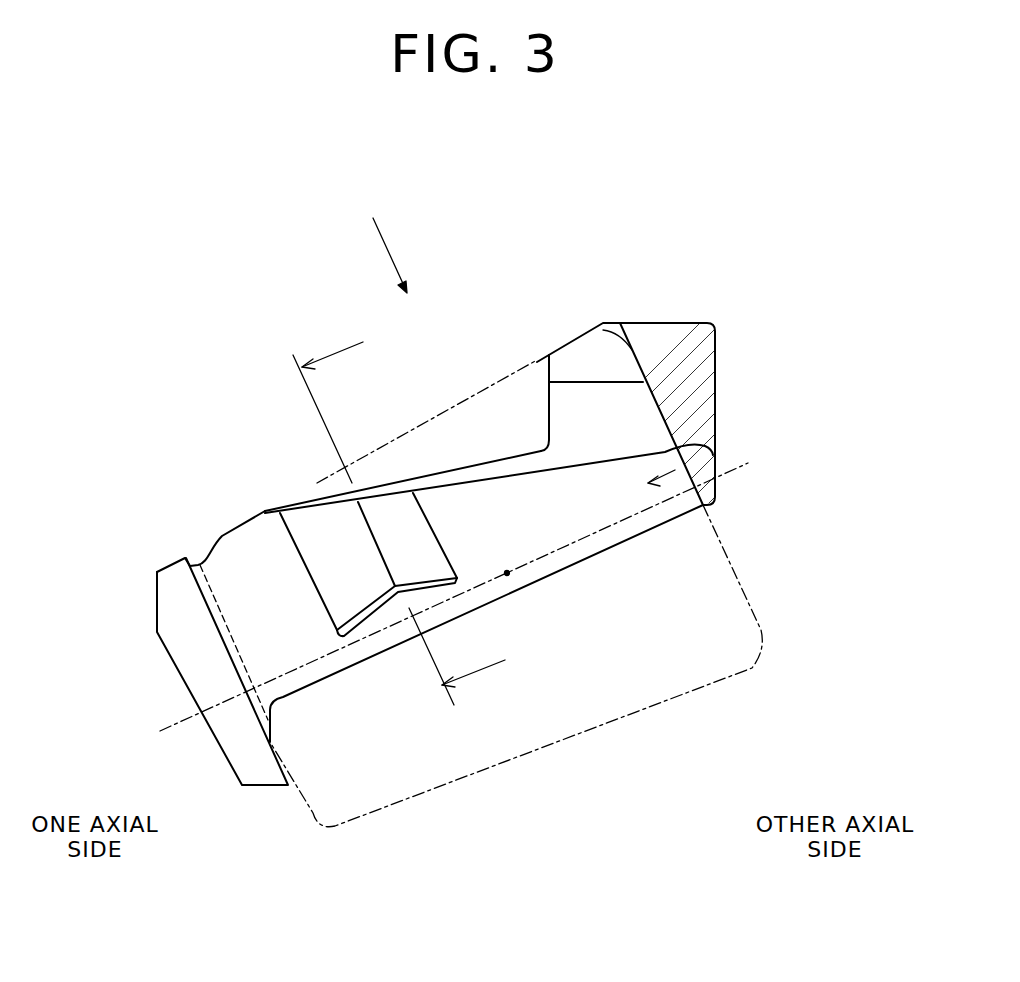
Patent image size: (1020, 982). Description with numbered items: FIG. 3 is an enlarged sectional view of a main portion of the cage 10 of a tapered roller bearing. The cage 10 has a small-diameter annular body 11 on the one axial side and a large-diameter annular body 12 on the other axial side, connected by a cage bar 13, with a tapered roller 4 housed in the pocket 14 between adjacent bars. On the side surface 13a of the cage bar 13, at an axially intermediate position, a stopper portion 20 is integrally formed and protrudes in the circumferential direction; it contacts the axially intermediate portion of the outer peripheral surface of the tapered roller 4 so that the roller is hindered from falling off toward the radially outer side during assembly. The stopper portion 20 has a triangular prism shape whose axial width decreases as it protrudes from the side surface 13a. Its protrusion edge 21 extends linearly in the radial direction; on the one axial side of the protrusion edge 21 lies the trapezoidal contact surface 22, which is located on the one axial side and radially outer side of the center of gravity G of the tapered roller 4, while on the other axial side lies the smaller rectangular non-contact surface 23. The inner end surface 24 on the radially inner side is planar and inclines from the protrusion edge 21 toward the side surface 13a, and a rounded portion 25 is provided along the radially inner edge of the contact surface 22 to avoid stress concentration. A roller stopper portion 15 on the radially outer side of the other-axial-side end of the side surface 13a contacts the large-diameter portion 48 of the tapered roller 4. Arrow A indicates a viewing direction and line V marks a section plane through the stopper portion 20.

The cage 10 is at (526, 514).
The small-diameter annular body 11 is at (205, 655).
The large-diameter annular body 12 is at (690, 383).
The cage bar 13 is at (438, 470).
The side surface 13a is at (493, 520).
The pocket 14 is at (697, 482).
The roller stopper portion 15 is at (585, 355).
The tapered roller 4 is at (527, 365).
The stopper portion 20 is at (280, 567).
The protrusion edge 21 is at (382, 545).
The contact surface 22 is at (330, 555).
The non-contact surface 23 is at (420, 545).
The inner end surface 24 is at (390, 598).
The rounded portion 25 is at (358, 622).
The large-diameter portion 48 is at (668, 678).
The center of gravity G is at (508, 575).
The arrow A is at (390, 250).
The line V- V is at (399, 511).